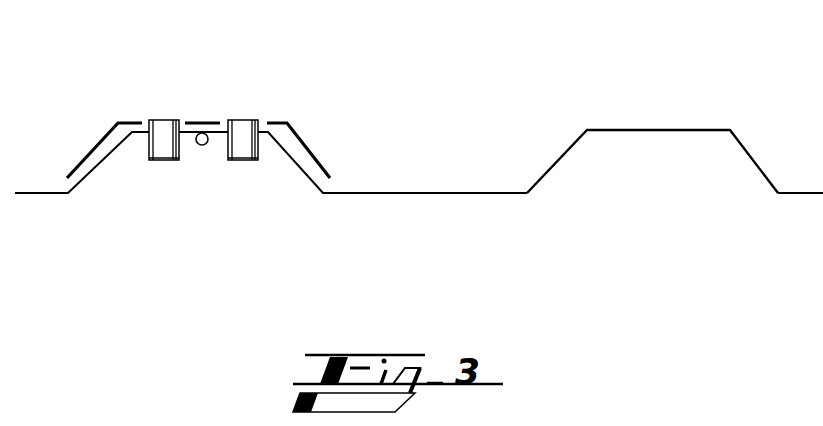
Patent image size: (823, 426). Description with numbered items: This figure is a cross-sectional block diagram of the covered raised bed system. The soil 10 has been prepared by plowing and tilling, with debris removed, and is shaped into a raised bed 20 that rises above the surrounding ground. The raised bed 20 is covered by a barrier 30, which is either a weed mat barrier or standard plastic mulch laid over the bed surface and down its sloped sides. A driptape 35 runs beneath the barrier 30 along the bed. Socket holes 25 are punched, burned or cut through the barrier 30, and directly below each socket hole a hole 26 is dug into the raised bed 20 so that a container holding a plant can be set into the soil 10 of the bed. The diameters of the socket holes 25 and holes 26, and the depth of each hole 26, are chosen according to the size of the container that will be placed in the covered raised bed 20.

The soil 10 is at (295, 197).
The raised bed 20 is at (552, 165).
The socket hole 25 is at (163, 120).
The hole 26 is at (160, 143).
The barrier 30 is at (268, 122).
The driptape 35 is at (197, 144).